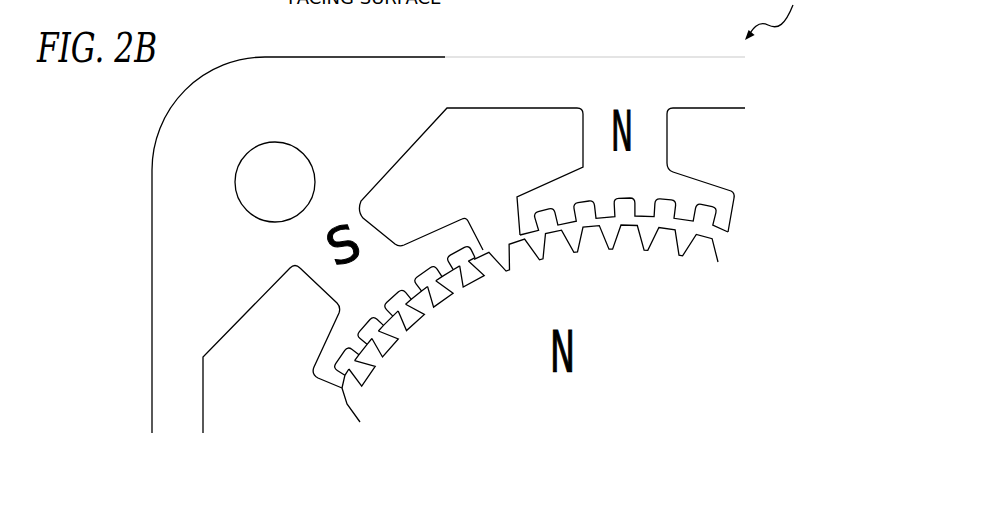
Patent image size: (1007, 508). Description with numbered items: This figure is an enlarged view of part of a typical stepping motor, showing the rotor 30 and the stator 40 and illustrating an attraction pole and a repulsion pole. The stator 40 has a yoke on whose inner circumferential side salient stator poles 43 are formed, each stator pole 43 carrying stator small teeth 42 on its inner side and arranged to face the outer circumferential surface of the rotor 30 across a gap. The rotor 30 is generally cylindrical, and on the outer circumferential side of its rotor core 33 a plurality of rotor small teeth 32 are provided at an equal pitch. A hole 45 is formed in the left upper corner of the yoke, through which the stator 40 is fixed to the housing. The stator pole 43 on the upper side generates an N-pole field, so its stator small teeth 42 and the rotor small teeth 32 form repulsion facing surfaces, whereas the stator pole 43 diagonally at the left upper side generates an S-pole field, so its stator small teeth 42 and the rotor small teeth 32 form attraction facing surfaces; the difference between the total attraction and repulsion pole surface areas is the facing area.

The rotor 30 is at (571, 323).
The rotor small teeth 32 is at (590, 233).
The rotor core 33 is at (527, 288).
The stator 40 is at (610, 57).
The stator small teeth 42 is at (645, 203).
The stator pole 43 is at (357, 226).
The hole 45 is at (293, 146).